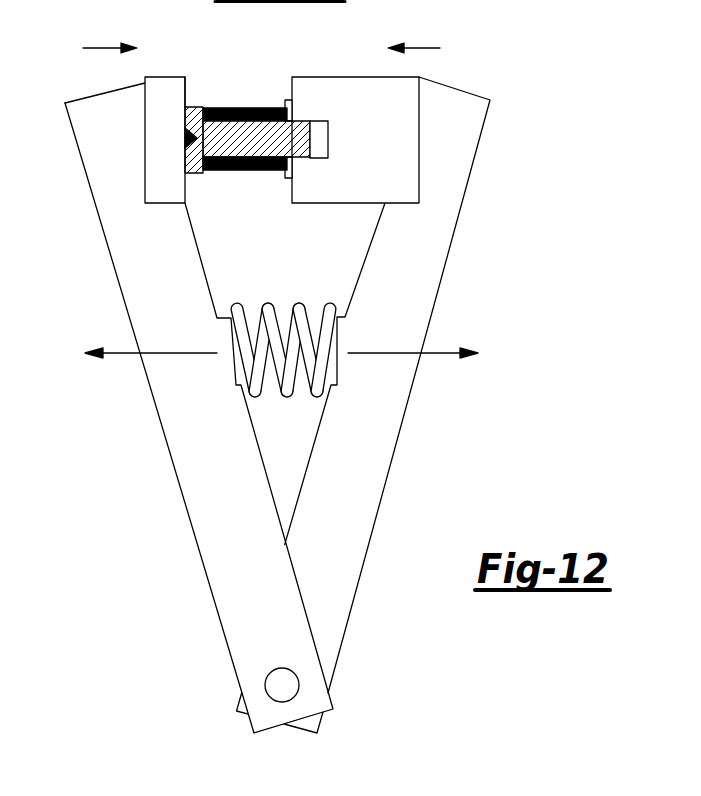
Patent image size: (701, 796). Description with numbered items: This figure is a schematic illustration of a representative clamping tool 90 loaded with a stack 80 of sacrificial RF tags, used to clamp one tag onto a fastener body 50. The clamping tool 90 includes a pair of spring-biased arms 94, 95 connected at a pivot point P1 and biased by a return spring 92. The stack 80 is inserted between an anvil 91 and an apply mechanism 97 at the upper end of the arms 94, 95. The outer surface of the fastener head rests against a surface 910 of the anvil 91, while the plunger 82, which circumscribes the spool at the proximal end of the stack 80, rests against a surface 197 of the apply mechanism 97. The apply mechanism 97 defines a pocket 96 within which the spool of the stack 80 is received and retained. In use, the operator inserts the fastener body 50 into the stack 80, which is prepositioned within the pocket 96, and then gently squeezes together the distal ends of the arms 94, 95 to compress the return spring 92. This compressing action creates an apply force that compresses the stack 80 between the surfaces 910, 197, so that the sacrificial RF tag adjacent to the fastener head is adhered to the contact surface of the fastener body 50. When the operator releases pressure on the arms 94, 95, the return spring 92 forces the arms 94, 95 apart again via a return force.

The clamping tool 90 is at (580, 173).
The anvil 91 is at (163, 158).
The surface of the anvil 910 is at (190, 85).
The return spring 92 is at (276, 285).
The spring-biased arm 94 is at (218, 456).
The spring-biased arm 95 is at (366, 456).
The pocket 96 is at (322, 141).
The apply mechanism 97 is at (380, 154).
The surface of the apply mechanism 197 is at (293, 82).
The fastener body 50 is at (257, 152).
The stack 80 is at (239, 190).
The plunger 82 is at (283, 105).
The pivot point P1 is at (282, 686).